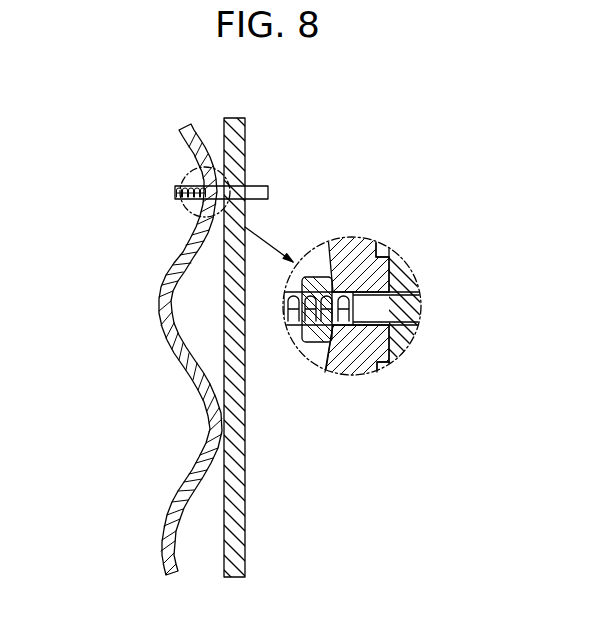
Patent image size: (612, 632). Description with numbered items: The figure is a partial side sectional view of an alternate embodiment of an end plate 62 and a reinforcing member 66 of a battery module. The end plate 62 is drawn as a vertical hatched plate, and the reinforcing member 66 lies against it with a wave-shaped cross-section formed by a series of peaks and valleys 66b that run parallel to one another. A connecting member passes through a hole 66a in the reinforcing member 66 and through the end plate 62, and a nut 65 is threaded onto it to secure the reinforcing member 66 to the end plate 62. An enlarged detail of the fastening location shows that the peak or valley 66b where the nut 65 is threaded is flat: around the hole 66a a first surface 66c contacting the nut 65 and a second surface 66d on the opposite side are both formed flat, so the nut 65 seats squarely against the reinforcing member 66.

The end plate 62 is at (236, 118).
The nut 65 is at (311, 276).
The reinforcing member 66 is at (180, 127).
The hole 66a is at (360, 338).
The peaks and valleys 66b is at (192, 428).
The first surface 66c is at (336, 270).
The second surface 66d is at (392, 342).